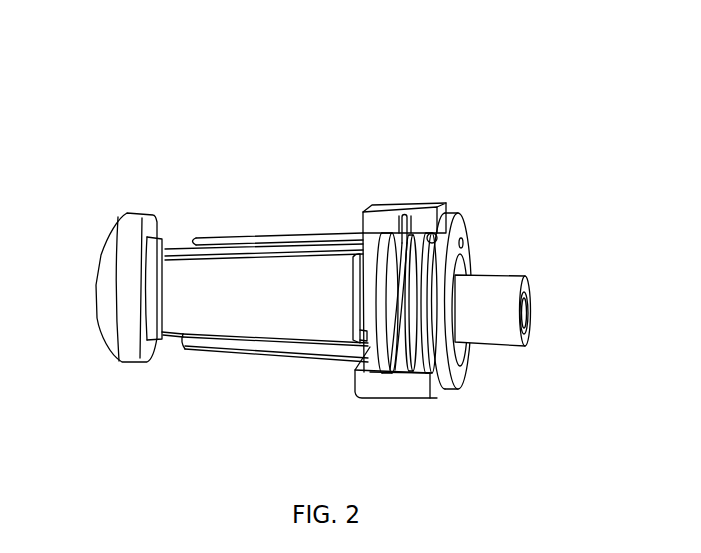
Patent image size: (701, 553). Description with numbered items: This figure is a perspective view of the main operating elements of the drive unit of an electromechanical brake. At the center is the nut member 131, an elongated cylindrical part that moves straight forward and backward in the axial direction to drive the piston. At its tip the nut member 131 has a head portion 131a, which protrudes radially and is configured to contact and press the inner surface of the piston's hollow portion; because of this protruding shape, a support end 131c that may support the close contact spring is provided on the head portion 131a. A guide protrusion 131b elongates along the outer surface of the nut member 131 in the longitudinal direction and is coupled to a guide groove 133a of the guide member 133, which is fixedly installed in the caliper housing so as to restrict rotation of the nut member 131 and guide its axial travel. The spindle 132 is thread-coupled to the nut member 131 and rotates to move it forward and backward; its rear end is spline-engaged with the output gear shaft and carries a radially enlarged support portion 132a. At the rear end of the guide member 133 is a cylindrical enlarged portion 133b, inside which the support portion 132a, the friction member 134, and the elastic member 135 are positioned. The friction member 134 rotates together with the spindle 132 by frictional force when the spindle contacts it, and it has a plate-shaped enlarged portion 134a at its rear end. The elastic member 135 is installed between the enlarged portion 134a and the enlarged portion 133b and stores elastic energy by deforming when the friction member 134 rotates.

The nut member 131 is at (250, 320).
The head portion 131a is at (108, 240).
The guide protrusion 131b is at (244, 235).
The support end 131c is at (146, 352).
The spindle 132 is at (492, 277).
The support portion 132a is at (371, 345).
The guide member 133 is at (313, 236).
The guide groove 133a is at (198, 249).
The enlarged portion 133b is at (373, 212).
The friction member 134 is at (423, 350).
The enlarged portion 134a is at (452, 218).
The elastic member 135 is at (406, 219).